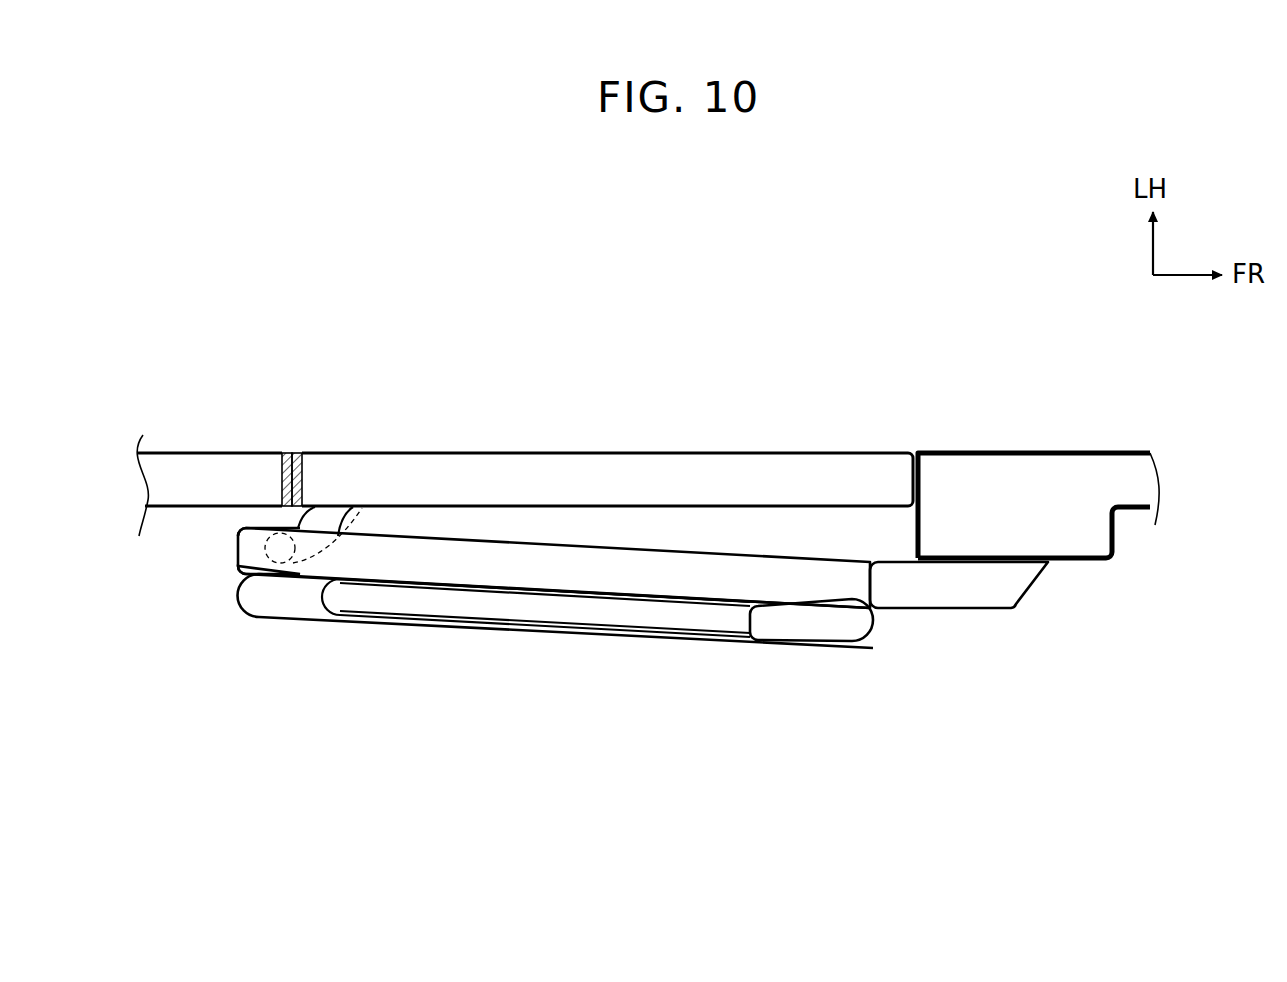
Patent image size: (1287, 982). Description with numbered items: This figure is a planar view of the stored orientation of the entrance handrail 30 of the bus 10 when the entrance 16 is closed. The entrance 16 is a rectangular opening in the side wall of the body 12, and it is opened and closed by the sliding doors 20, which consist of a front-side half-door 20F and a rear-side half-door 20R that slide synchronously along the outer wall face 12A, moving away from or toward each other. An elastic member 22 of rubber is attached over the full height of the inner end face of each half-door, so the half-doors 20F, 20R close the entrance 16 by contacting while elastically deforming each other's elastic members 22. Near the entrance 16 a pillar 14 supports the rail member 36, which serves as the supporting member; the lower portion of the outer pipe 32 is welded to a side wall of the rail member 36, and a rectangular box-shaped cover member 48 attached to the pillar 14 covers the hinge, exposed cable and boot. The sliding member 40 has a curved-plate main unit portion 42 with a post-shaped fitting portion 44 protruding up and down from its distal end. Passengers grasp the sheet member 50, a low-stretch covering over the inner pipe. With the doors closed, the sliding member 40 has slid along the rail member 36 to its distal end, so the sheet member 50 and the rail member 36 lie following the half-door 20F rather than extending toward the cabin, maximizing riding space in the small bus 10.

The bus 10 is at (546, 309).
The body 12 is at (1068, 504).
The outer wall face 12A is at (1098, 452).
The pillar 14 is at (1020, 548).
The entrance 16 is at (917, 452).
The sliding doors 20 is at (508, 424).
The rear-side half-door 20R is at (188, 450).
The front-side half-door 20F is at (683, 452).
The elastic member 22 is at (285, 452).
The entrance handrail 30 is at (556, 663).
The outer pipe 32 is at (826, 630).
The rail member 36 is at (737, 578).
The sliding member 40 is at (305, 563).
The main unit portion 42 is at (345, 513).
The fitting portion 44 is at (263, 560).
The cover member 48 is at (985, 588).
The sheet member 50 is at (502, 614).